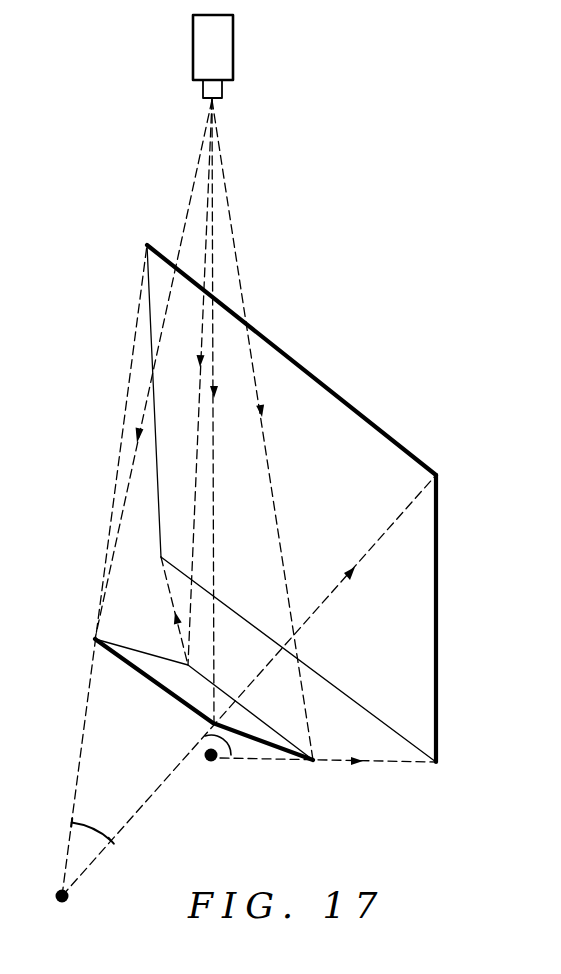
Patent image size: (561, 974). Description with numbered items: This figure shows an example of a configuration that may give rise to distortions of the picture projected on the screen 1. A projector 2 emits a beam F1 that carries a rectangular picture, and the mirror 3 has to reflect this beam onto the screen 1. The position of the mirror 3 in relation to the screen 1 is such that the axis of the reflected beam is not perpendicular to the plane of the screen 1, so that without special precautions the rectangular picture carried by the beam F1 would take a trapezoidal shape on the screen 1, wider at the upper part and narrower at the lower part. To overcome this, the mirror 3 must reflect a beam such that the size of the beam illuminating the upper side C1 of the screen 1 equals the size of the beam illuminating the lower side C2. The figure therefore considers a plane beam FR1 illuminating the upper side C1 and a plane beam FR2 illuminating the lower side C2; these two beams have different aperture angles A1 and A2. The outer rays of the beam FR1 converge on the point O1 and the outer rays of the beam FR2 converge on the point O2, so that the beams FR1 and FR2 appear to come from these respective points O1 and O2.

The screen 1 is at (321, 503).
The projector 2 is at (278, 52).
The mirror 3 is at (130, 703).
The beam F1 is at (276, 212).
The upper side of the screen C1 is at (400, 377).
The lower side of the screen C2 is at (458, 725).
The plane beam FR1 is at (458, 548).
The plane beam FR2 is at (402, 795).
The convergence point O1 is at (78, 909).
The convergence point O2 is at (205, 774).
The aperture angle A1 is at (95, 822).
The aperture angle A2 is at (260, 782).